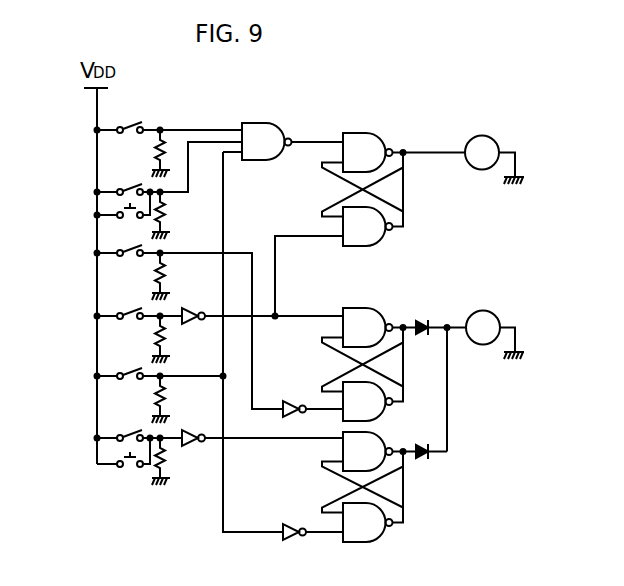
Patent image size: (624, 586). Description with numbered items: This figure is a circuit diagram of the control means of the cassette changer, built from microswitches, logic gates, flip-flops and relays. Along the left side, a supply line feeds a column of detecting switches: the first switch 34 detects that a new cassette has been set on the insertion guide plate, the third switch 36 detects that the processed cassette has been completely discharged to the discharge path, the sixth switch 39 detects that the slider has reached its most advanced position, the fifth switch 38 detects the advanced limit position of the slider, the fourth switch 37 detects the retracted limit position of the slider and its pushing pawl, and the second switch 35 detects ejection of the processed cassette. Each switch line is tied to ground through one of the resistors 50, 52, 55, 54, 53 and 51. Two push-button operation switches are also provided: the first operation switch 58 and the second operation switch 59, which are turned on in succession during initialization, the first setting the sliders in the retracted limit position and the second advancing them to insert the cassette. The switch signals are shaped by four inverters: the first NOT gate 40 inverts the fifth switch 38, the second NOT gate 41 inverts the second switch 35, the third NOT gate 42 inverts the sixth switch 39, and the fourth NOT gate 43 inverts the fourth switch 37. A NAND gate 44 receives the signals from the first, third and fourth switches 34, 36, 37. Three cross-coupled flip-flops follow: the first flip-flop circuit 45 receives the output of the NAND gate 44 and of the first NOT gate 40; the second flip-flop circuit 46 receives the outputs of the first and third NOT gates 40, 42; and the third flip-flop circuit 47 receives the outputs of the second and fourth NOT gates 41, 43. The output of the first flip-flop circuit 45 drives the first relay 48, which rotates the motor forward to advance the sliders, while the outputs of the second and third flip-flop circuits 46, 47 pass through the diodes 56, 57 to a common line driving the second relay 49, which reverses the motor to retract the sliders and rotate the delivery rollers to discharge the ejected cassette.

The first switch 34 is at (130, 118).
The second switch 35 is at (140, 432).
The third switch 36 is at (139, 186).
The fourth switch 37 is at (134, 380).
The fifth switch 38 is at (134, 318).
The sixth switch 39 is at (134, 258).
The first NOT gate 40 is at (188, 306).
The second NOT gate 41 is at (188, 430).
The third NOT gate 42 is at (293, 398).
The fourth NOT gate 43 is at (293, 520).
The NAND gate 44 is at (275, 123).
The first flip-flop circuit 45 is at (393, 193).
The second flip-flop circuit 46 is at (390, 367).
The third flip-flop circuit 47 is at (398, 491).
The first relay 48 is at (494, 141).
The second relay 49 is at (494, 317).
The resistor 50 is at (165, 152).
The resistor 51 is at (165, 457).
The resistor 52 is at (165, 212).
The resistor 53 is at (165, 389).
The resistor 54 is at (165, 346).
The resistor 55 is at (165, 265).
The diode 56 is at (424, 320).
The diode 57 is at (426, 447).
The first operation switch 58 is at (125, 470).
The second operation switch 59 is at (130, 221).